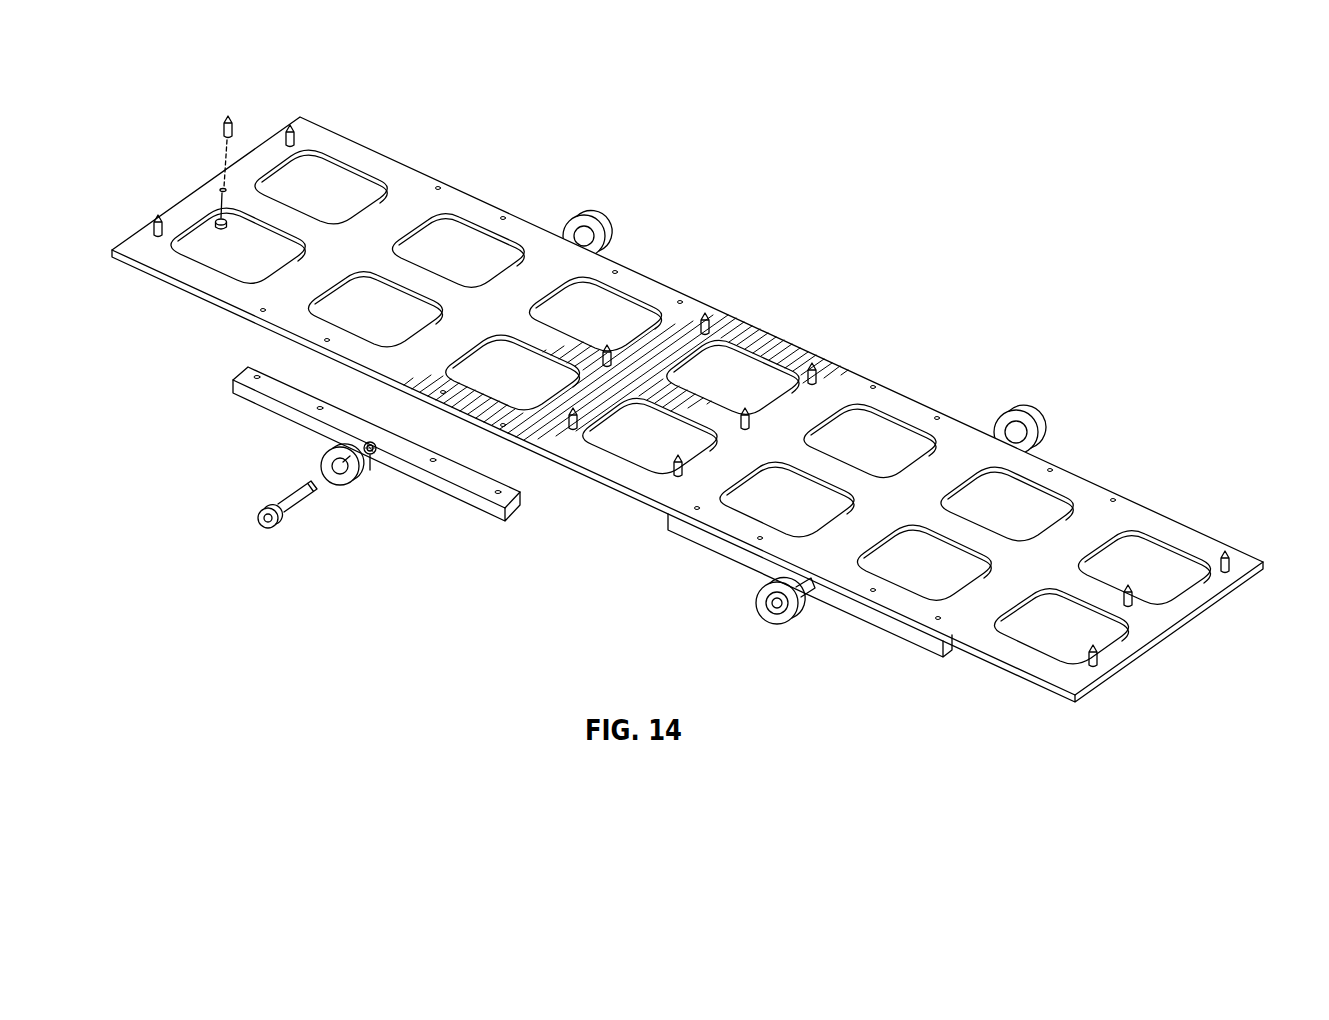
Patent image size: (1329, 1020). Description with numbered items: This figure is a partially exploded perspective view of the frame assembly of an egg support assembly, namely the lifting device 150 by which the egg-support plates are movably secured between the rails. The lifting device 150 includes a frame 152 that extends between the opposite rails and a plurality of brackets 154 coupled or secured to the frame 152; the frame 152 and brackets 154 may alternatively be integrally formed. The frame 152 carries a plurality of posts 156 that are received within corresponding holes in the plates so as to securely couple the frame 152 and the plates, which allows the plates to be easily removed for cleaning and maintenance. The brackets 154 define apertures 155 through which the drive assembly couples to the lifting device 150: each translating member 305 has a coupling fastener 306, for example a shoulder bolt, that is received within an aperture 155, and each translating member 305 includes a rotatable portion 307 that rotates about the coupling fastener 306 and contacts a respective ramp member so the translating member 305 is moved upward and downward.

The lifting device 150 is at (1031, 691).
The frame 152 is at (1122, 510).
The brackets 154 is at (476, 497).
The apertures 155 is at (371, 460).
The posts 156 is at (229, 131).
The translating members 305 is at (601, 216).
The coupling fastener 306 is at (294, 517).
The rotatable portion 307 is at (325, 458).